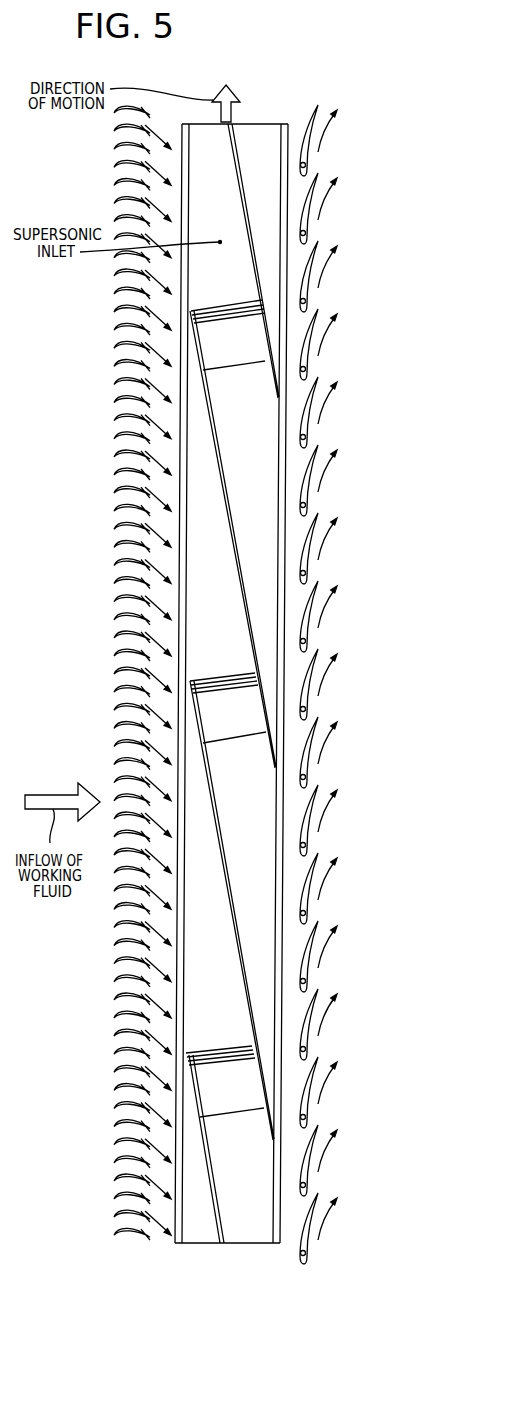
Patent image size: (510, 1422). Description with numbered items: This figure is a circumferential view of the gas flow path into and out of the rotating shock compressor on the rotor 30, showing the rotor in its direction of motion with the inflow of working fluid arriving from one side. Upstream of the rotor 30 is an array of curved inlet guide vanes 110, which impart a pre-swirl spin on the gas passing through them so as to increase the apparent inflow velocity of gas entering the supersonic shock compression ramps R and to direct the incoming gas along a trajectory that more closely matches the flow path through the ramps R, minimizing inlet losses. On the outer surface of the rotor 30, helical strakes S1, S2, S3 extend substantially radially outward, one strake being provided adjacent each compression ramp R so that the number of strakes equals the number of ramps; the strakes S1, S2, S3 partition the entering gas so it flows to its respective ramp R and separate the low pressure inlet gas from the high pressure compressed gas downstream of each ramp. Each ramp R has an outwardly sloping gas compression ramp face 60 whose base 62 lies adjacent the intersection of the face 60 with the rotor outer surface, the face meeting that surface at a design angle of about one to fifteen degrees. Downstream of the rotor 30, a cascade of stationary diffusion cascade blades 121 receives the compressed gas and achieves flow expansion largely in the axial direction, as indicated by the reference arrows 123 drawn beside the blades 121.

The first rotor 30 is at (210, 625).
The gas compression ramp face 60 is at (193, 309).
The base 62 is at (203, 309).
The supersonic shock compression ramp R is at (210, 343).
The inlet guide vanes 110 is at (125, 108).
The stationary diffusion cascade blades 121 is at (313, 125).
The reference arrows 123 is at (325, 137).
The helical strake S1 is at (232, 972).
The helical strake S2 is at (226, 514).
The helical strake S3 is at (195, 1260).